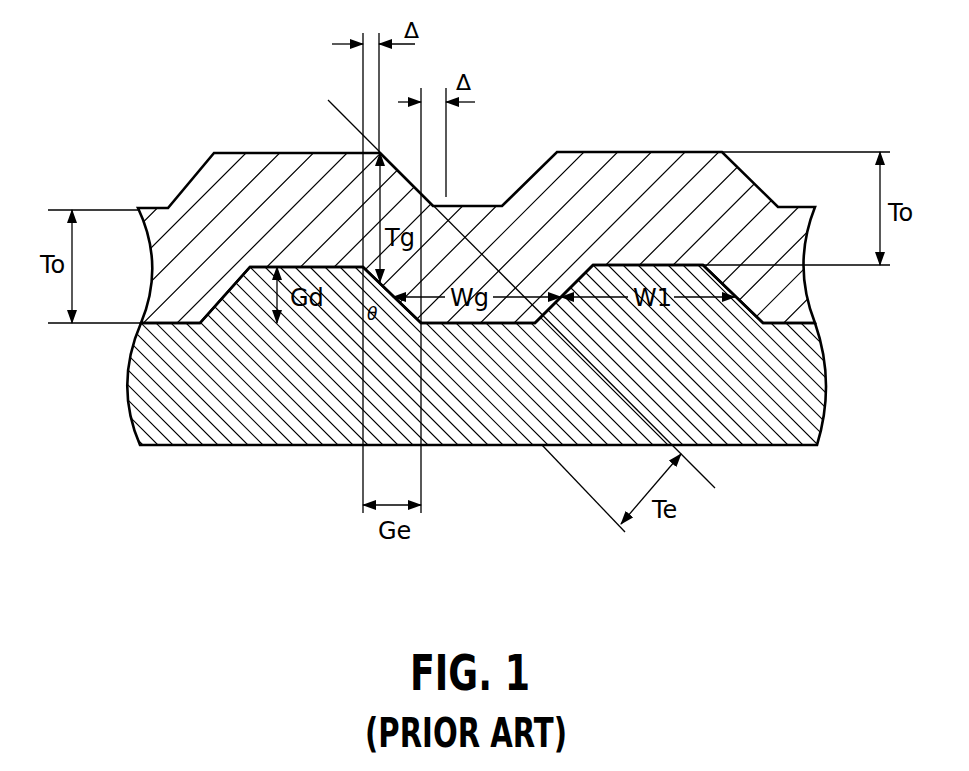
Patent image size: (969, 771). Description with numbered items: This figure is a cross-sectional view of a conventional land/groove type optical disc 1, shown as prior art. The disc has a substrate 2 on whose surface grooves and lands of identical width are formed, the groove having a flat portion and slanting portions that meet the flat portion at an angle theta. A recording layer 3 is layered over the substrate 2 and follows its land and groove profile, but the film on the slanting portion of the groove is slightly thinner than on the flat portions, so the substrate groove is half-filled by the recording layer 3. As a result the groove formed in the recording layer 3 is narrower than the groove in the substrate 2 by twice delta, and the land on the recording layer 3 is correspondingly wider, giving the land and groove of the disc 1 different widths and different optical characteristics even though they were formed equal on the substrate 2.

The optical disc 1 is at (731, 124).
The substrate 2 is at (810, 388).
The recording layer 3 is at (795, 295).